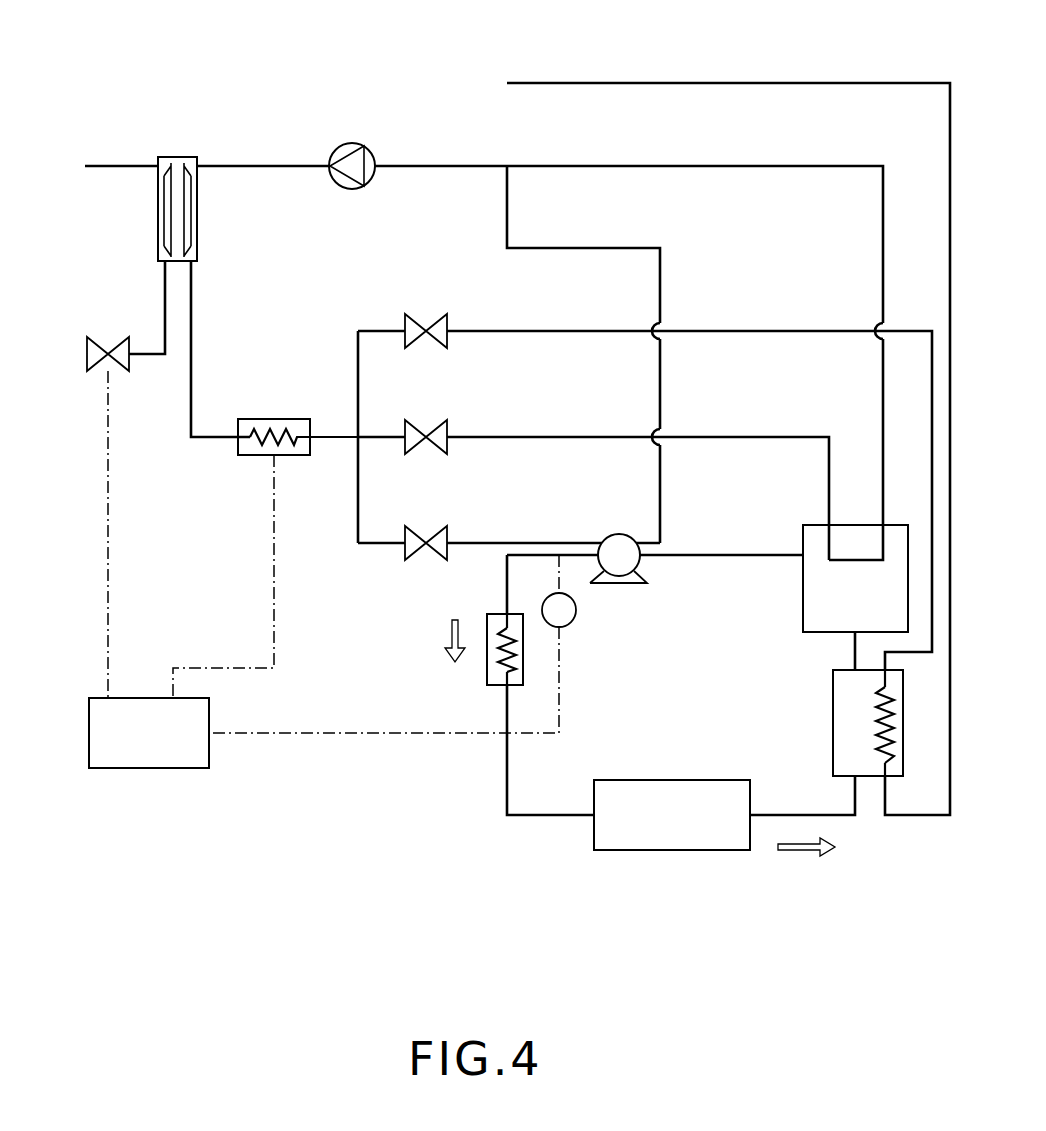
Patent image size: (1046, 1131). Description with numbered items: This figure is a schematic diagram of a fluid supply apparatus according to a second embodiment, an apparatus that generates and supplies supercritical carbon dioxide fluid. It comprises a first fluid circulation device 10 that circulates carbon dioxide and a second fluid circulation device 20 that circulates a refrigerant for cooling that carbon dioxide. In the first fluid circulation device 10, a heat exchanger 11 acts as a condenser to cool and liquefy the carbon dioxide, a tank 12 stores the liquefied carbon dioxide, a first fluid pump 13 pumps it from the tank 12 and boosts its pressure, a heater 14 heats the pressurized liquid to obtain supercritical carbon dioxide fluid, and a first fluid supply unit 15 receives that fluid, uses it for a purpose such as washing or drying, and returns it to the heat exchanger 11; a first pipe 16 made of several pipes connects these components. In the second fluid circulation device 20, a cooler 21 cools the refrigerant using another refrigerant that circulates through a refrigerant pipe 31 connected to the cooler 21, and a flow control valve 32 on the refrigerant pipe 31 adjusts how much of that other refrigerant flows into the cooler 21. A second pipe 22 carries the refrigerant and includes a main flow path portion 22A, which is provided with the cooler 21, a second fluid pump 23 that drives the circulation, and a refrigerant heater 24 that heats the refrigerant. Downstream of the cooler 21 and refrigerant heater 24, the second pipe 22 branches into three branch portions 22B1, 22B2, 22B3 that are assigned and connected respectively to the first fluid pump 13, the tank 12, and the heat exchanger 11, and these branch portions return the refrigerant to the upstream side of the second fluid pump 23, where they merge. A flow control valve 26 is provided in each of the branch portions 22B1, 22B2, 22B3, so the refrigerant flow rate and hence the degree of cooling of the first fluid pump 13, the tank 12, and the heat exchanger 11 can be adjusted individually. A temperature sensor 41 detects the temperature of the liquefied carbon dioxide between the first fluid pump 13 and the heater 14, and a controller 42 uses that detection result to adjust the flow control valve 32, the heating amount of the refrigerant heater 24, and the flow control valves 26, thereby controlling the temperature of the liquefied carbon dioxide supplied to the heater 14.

The first fluid circulation device 10 is at (505, 806).
The heat exchanger 11 is at (833, 722).
The tank 12 is at (803, 600).
The first fluid pump 13 is at (613, 533).
The heater 14 is at (487, 660).
The first fluid supply unit 15 is at (670, 852).
The first pipe 16 is at (552, 817).
The second fluid circulation device 20 is at (276, 162).
The cooler 21 is at (176, 155).
The second pipe 22 is at (436, 162).
The main flow path portion 22A is at (212, 440).
The branch portion 22B1 is at (478, 540).
The branch portion 22B2 is at (505, 434).
The branch portion 22B3 is at (505, 328).
The second fluid pump 23 is at (350, 143).
The refrigerant heater 24 is at (272, 418).
The flow control valve 26 is at (424, 320).
The refrigerant pipe 31 is at (160, 292).
The flow control valve 32 is at (118, 366).
The temperature sensor 41 is at (572, 618).
The controller 42 is at (148, 770).